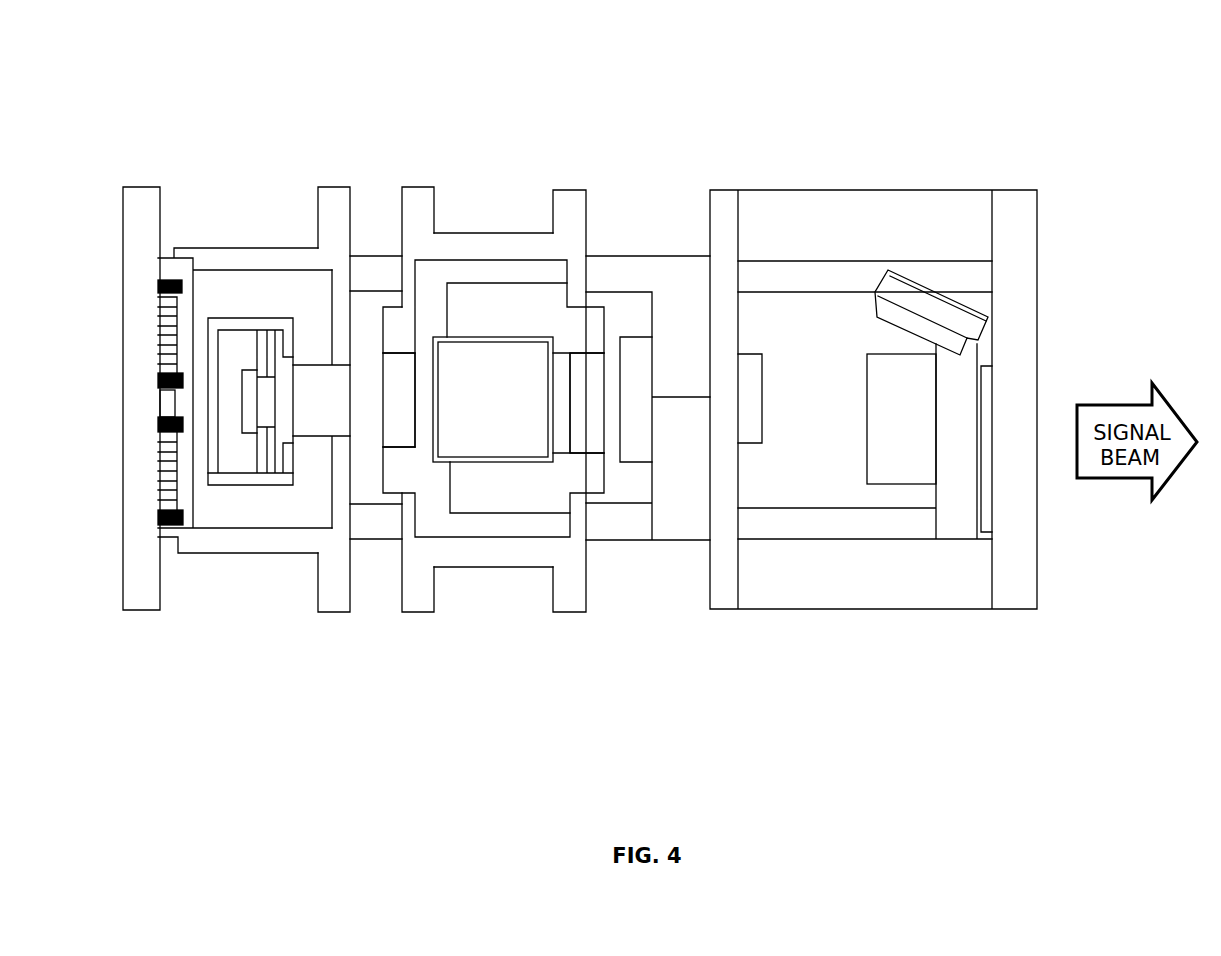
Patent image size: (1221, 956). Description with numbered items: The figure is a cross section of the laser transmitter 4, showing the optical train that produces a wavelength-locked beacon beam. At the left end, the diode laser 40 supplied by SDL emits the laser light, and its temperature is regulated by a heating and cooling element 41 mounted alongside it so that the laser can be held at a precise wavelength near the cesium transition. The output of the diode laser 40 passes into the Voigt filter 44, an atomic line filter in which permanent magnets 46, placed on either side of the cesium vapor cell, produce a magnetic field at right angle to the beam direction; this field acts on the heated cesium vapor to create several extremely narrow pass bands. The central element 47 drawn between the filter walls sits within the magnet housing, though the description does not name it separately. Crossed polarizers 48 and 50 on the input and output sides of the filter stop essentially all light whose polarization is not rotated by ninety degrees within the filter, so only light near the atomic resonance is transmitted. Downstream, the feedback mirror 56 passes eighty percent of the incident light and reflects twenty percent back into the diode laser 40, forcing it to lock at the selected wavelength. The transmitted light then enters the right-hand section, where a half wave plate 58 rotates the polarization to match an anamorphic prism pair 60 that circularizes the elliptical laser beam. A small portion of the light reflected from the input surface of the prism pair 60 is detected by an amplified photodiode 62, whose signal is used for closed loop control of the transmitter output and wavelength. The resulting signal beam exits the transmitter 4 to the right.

The transmitter 4 is at (732, 97).
The diode laser 40 is at (265, 483).
The heating and cooling element 41 is at (166, 286).
The Voigt filter 44 is at (358, 632).
The permanent magnets 46 is at (473, 233).
The lens 47 is at (485, 463).
The crossed polarizer 48 is at (402, 352).
The crossed polarizer 50 is at (580, 353).
The feedback mirror 56 is at (627, 337).
The half wave plate 58 is at (752, 354).
The anamorphic prism pair 60 is at (891, 484).
The amplified photodiode 62 is at (920, 278).